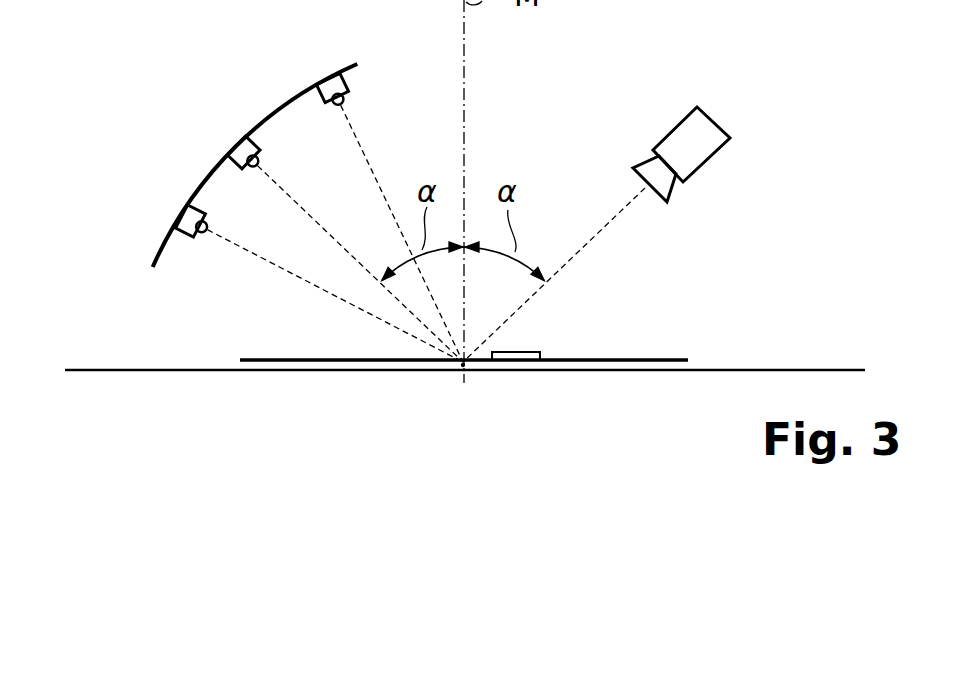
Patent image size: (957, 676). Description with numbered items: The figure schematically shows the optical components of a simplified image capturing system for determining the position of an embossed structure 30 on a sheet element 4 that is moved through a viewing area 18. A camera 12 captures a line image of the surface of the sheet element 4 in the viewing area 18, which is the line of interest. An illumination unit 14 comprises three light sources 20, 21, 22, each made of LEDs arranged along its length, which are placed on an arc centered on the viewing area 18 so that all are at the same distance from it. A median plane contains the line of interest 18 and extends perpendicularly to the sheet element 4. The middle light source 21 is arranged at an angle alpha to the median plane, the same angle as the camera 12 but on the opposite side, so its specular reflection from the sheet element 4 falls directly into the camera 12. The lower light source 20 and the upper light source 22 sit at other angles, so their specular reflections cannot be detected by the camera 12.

The sheet element 4 is at (665, 358).
The camera 12 is at (715, 118).
The illumination unit 14 is at (190, 109).
The viewing area 18 is at (463, 368).
The lower light source 20 is at (183, 217).
The middle light source 21 is at (243, 140).
The upper light source 22 is at (330, 83).
The embossed structure 30 is at (523, 352).